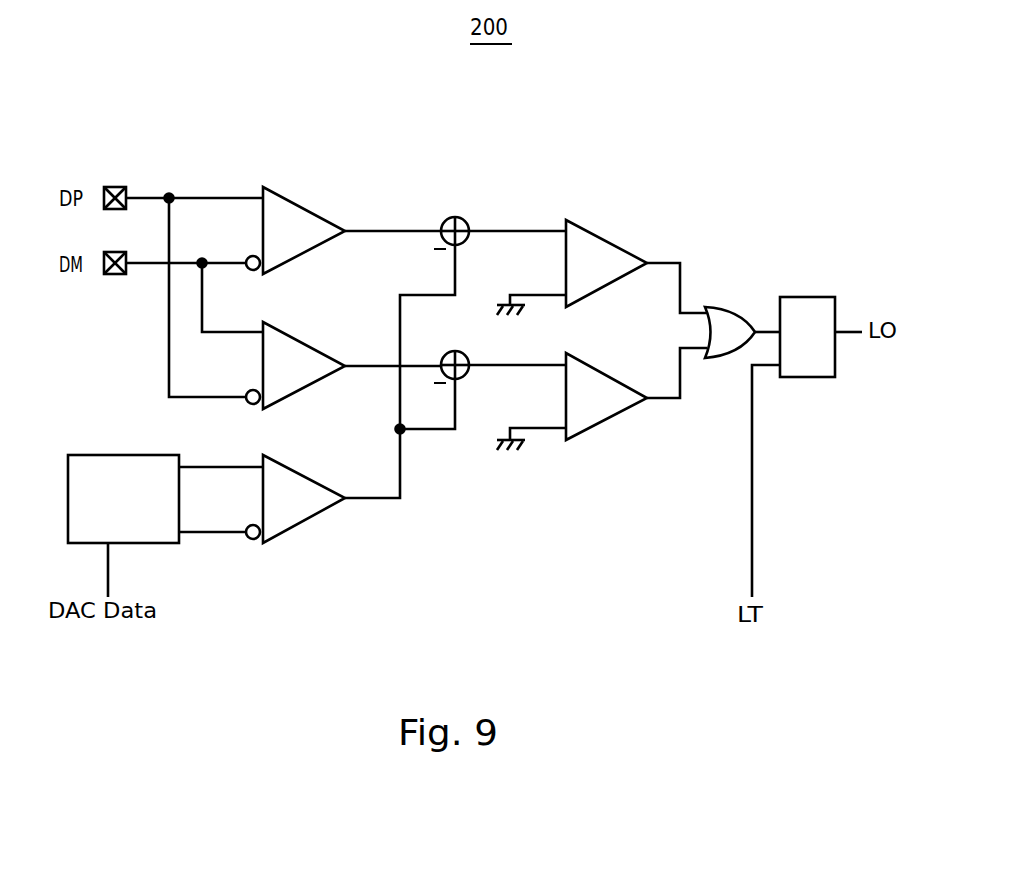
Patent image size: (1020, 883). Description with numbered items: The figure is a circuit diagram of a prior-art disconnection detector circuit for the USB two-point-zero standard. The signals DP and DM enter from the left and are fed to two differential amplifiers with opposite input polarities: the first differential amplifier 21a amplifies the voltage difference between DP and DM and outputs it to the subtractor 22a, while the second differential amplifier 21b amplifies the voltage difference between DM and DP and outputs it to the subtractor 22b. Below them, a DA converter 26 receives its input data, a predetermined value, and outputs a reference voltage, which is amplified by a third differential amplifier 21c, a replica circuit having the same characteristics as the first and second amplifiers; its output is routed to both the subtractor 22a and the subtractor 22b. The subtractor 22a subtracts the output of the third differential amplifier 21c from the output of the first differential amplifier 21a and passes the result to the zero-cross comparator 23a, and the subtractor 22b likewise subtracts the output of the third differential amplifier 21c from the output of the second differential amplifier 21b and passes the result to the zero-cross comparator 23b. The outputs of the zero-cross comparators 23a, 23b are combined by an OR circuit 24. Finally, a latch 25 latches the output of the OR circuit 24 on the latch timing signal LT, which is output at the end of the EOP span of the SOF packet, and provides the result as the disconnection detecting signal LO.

The first differential amplifier 21a is at (308, 199).
The second differential amplifier 21b is at (308, 329).
The third differential amplifier 21c is at (308, 466).
The subtractor 22a is at (468, 240).
The subtractor 22b is at (468, 374).
The zero-cross comparator 23a is at (612, 237).
The zero-cross comparator 23b is at (612, 370).
The OR circuit 24 is at (727, 305).
The latch 25 is at (812, 297).
The DA converter 26 is at (99, 455).